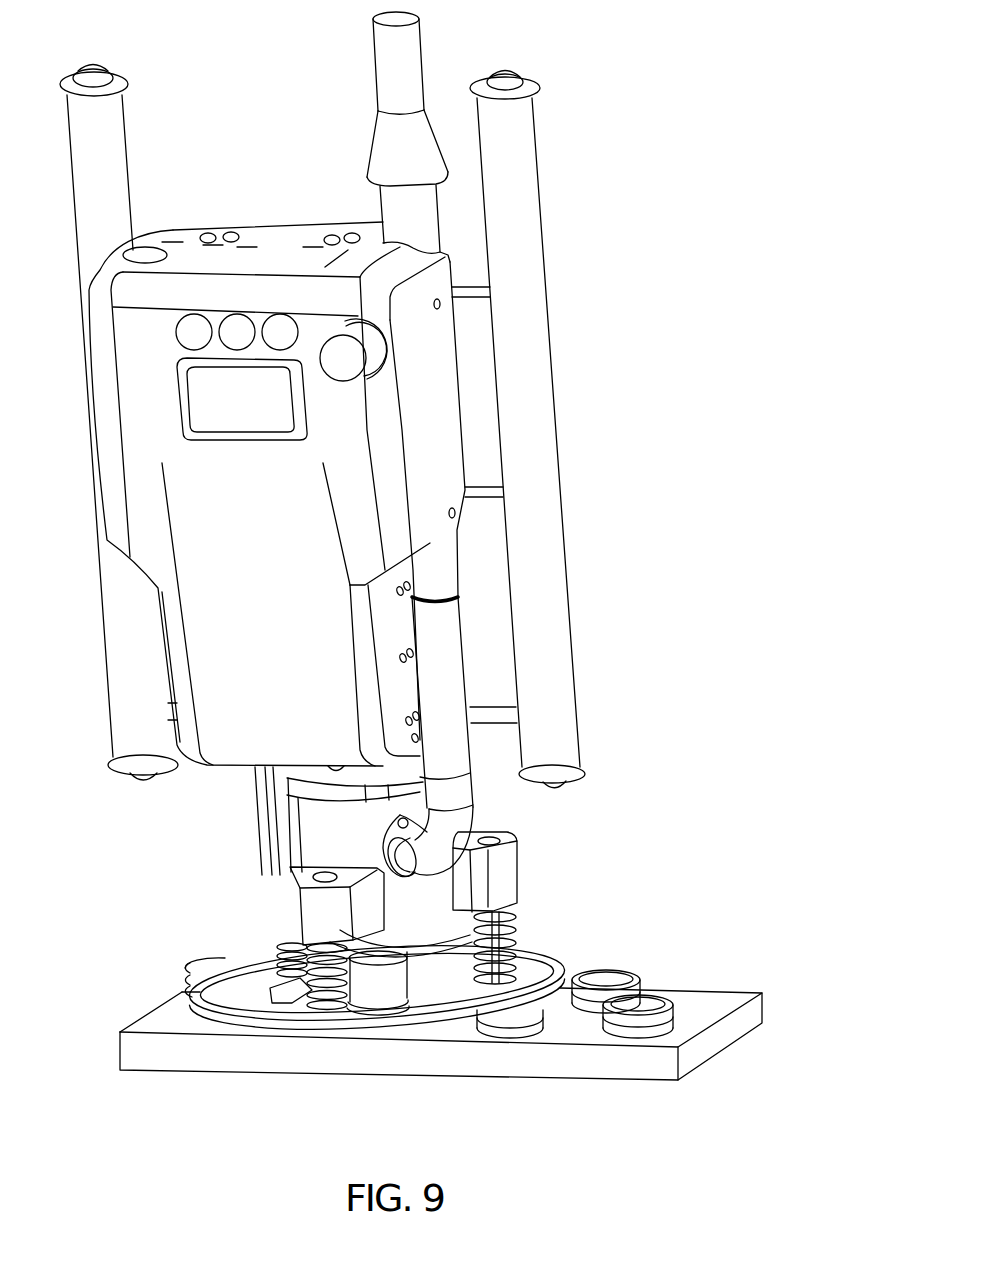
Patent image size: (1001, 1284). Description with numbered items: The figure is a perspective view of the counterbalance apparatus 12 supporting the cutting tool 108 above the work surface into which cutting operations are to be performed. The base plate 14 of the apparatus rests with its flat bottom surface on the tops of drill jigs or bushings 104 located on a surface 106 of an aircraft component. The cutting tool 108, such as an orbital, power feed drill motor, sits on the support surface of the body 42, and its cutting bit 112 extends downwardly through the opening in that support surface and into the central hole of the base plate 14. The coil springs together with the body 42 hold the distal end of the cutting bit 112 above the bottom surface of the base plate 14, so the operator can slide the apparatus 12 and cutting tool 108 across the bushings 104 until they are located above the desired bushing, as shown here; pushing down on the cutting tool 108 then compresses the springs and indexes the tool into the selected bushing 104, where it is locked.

The counterbalance apparatus 12 is at (567, 862).
The base plate 14 is at (567, 953).
The body 42 is at (521, 838).
The drill jigs or bushings 104 is at (203, 963).
The surface of an aircraft component 106 is at (717, 1007).
The cutting tool 108 is at (427, 487).
The cutting bit 112 is at (378, 978).